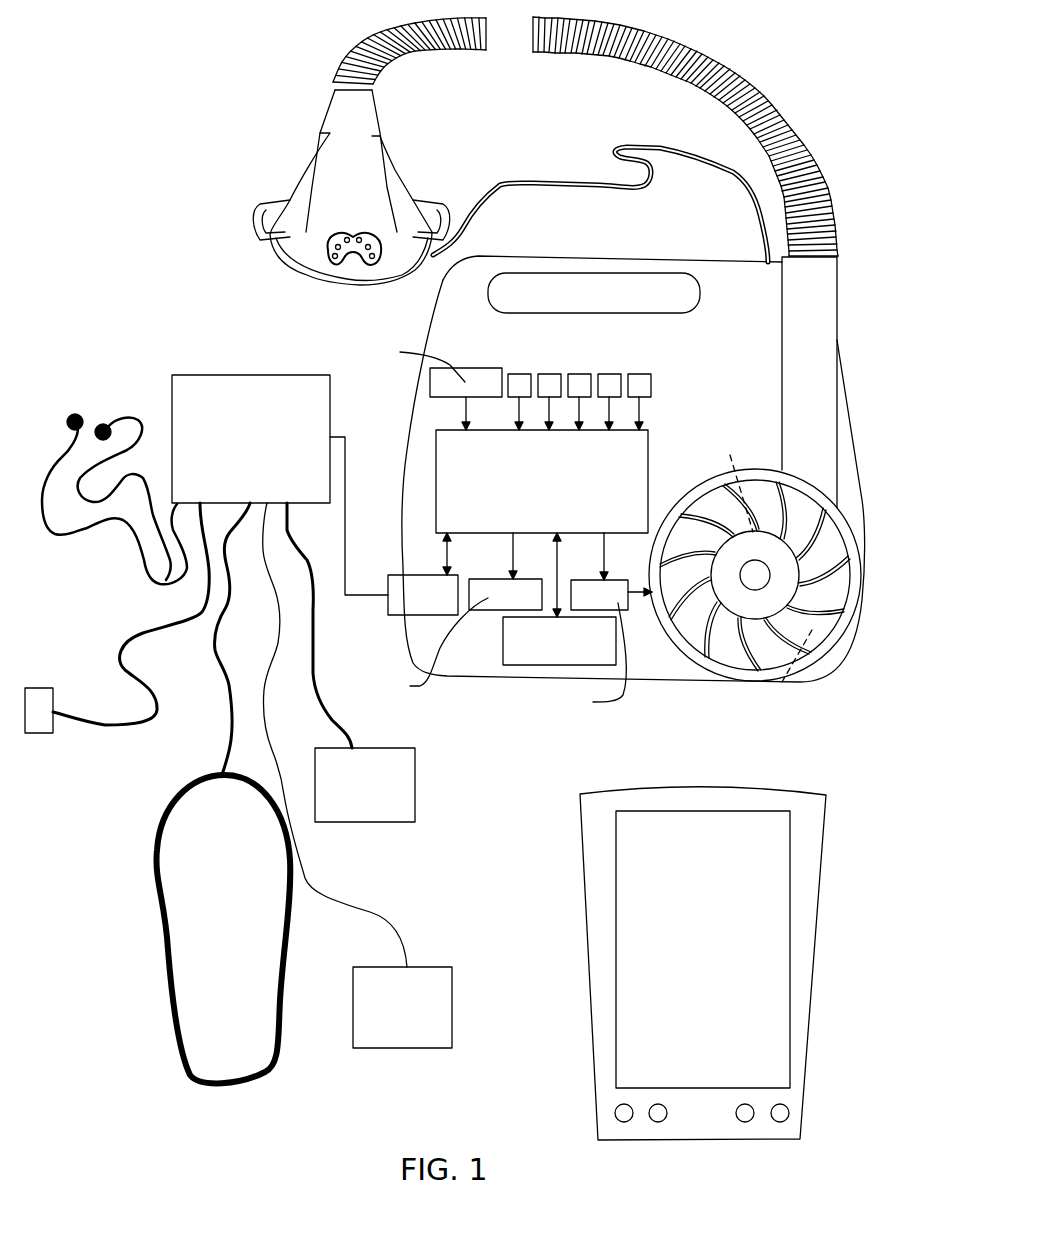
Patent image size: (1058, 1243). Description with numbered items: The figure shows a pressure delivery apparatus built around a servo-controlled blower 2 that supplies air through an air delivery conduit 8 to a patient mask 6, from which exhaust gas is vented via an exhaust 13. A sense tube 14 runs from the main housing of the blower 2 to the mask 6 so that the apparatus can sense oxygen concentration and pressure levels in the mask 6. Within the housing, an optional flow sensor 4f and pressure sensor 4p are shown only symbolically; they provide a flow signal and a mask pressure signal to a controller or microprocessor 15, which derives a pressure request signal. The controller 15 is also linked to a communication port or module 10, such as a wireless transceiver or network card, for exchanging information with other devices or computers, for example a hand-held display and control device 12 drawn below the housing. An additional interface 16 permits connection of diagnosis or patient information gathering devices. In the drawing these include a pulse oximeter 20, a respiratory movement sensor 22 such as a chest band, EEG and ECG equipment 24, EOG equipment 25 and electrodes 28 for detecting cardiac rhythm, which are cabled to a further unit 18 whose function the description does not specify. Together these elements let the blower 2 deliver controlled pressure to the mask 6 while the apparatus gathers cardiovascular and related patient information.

The servo-controlled blower 2 is at (650, 678).
The flow sensor 4f is at (518, 373).
The pressure sensor 4p is at (553, 373).
The mask 6 is at (307, 278).
The air delivery conduit 8 is at (785, 112).
The communication port or module 10 is at (523, 647).
The hand-held display and control device 12 is at (709, 794).
The exhaust 13 is at (337, 232).
The sense tube 14 is at (573, 181).
The controller or microprocessor 15 is at (620, 468).
The additional interface 16 is at (417, 580).
The sensor data acquisition module 18 is at (237, 386).
The pulse oximeter 20 is at (40, 688).
The respiratory movement sensor 22 is at (158, 825).
The EEG & ECG 24 is at (407, 772).
The EOG 25 is at (438, 985).
The electrodes 28 is at (93, 410).